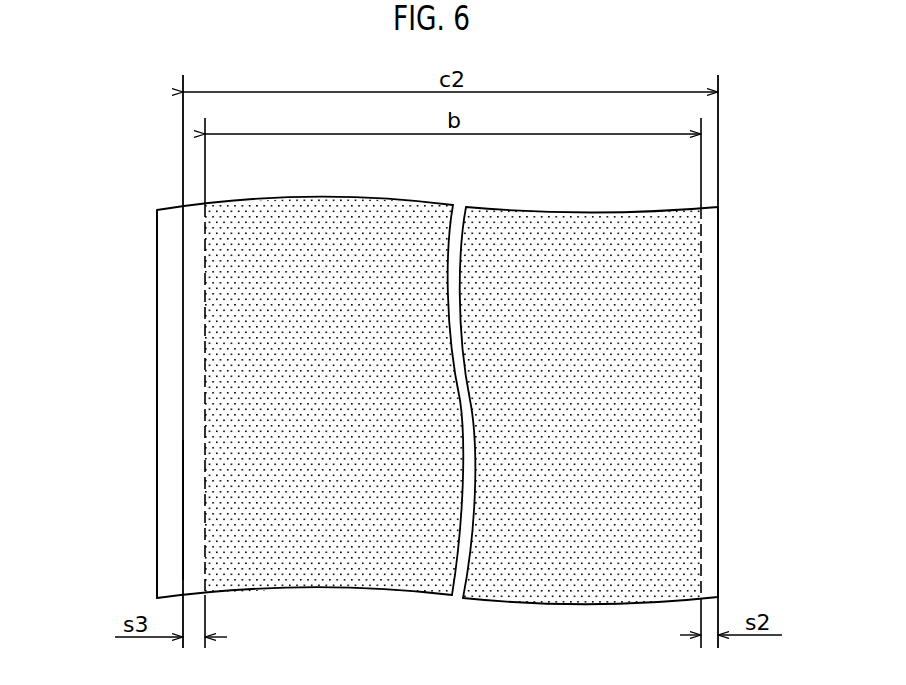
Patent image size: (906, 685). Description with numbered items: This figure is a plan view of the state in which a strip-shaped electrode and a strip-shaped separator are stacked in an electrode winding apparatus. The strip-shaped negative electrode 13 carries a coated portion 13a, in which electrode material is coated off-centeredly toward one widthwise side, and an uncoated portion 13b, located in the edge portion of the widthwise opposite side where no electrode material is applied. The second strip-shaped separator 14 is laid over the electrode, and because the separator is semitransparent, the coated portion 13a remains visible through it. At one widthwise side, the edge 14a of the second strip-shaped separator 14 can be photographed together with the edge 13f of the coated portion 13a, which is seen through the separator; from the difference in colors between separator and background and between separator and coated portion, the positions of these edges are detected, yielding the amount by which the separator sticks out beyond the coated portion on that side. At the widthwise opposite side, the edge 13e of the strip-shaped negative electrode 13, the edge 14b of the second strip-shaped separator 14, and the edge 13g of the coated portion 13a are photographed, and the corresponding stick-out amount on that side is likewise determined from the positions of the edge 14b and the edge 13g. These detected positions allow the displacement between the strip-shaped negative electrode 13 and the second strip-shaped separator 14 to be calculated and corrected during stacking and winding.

The strip-shaped negative electrode 13 is at (120, 273).
The coated portion 13a is at (565, 228).
The uncoated portion 13b is at (165, 458).
The edge of strip-shaped negative electrode 13e is at (157, 385).
The edge of coated portion 13f is at (702, 318).
The edge of coated portion 13g is at (204, 322).
The second strip-shaped separator 14 is at (710, 457).
The edge of second strip-shaped separator 14a is at (718, 383).
The edge of second strip-shaped separator 14b is at (183, 507).